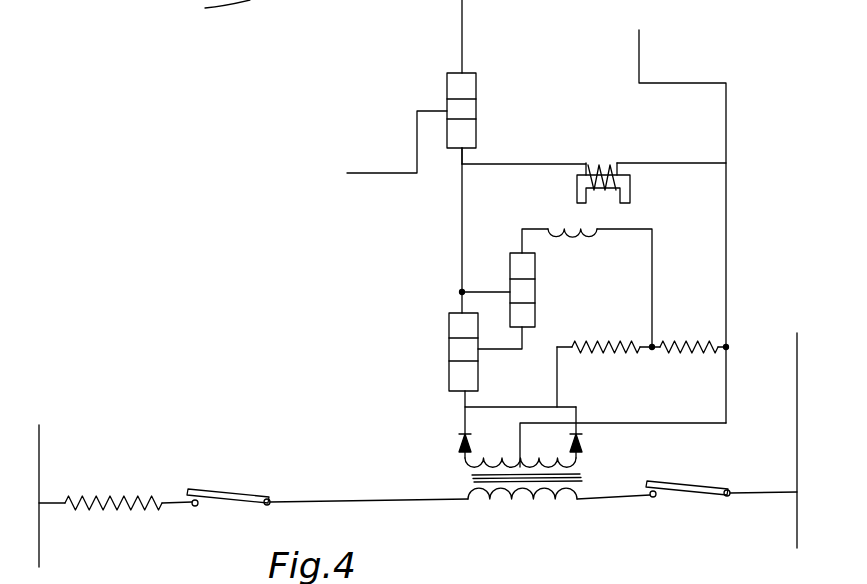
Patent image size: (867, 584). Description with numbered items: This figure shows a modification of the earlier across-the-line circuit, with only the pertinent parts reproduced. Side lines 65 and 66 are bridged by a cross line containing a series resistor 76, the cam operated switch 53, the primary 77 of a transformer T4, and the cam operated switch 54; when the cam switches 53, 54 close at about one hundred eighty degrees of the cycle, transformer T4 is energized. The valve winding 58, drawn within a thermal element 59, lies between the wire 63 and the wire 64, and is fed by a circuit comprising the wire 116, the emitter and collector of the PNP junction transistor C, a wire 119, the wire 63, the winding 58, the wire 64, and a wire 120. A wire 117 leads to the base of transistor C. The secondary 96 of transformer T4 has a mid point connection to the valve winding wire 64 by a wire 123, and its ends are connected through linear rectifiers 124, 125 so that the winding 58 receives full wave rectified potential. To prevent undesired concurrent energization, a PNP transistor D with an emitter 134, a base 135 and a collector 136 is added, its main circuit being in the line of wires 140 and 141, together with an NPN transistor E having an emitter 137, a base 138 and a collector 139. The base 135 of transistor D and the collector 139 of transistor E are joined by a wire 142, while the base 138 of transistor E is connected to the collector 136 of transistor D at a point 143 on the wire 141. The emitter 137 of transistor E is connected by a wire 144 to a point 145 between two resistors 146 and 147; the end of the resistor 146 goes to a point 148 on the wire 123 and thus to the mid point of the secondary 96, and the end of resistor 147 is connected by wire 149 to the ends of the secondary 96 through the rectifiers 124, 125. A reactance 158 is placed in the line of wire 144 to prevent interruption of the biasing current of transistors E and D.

The wire 116 is at (460, 18).
The PNP junction transistor C is at (447, 73).
The base lead conductor 117 is at (416, 140).
The wire 119 is at (460, 160).
The wire 63 is at (527, 164).
The valve winding 58 is at (598, 170).
The thermal relay 59 is at (631, 181).
The wire 64 is at (676, 163).
The wire 120 is at (727, 127).
The wire 144 is at (545, 230).
The reactance 158 is at (572, 234).
The NPN transistor E is at (510, 253).
The wire 141 is at (459, 243).
The point 143 is at (461, 291).
The emitter 137 is at (536, 266).
The base 138 is at (536, 291).
The collector 139 is at (536, 315).
The PNP transistor D is at (449, 313).
The collector 136 is at (448, 329).
The base 135 is at (448, 351).
The emitter 134 is at (448, 375).
The wire 142 is at (516, 349).
The wire 140 is at (463, 399).
The wire 149 is at (558, 372).
The resistor 147 is at (603, 347).
The point 145 is at (652, 350).
The resistor 146 is at (686, 342).
The point 148 is at (728, 347).
The wire 123 is at (632, 423).
The linear rectifier 125 is at (459, 443).
The linear rectifier 124 is at (583, 446).
The secondary 96 is at (463, 467).
The transformer T4 is at (582, 478).
The primary 77 is at (540, 500).
The side line 65 is at (40, 458).
The resistor 76 is at (109, 499).
The cam operated switch 53 is at (249, 489).
The cam operated switch 54 is at (702, 481).
The side line 66 is at (796, 409).